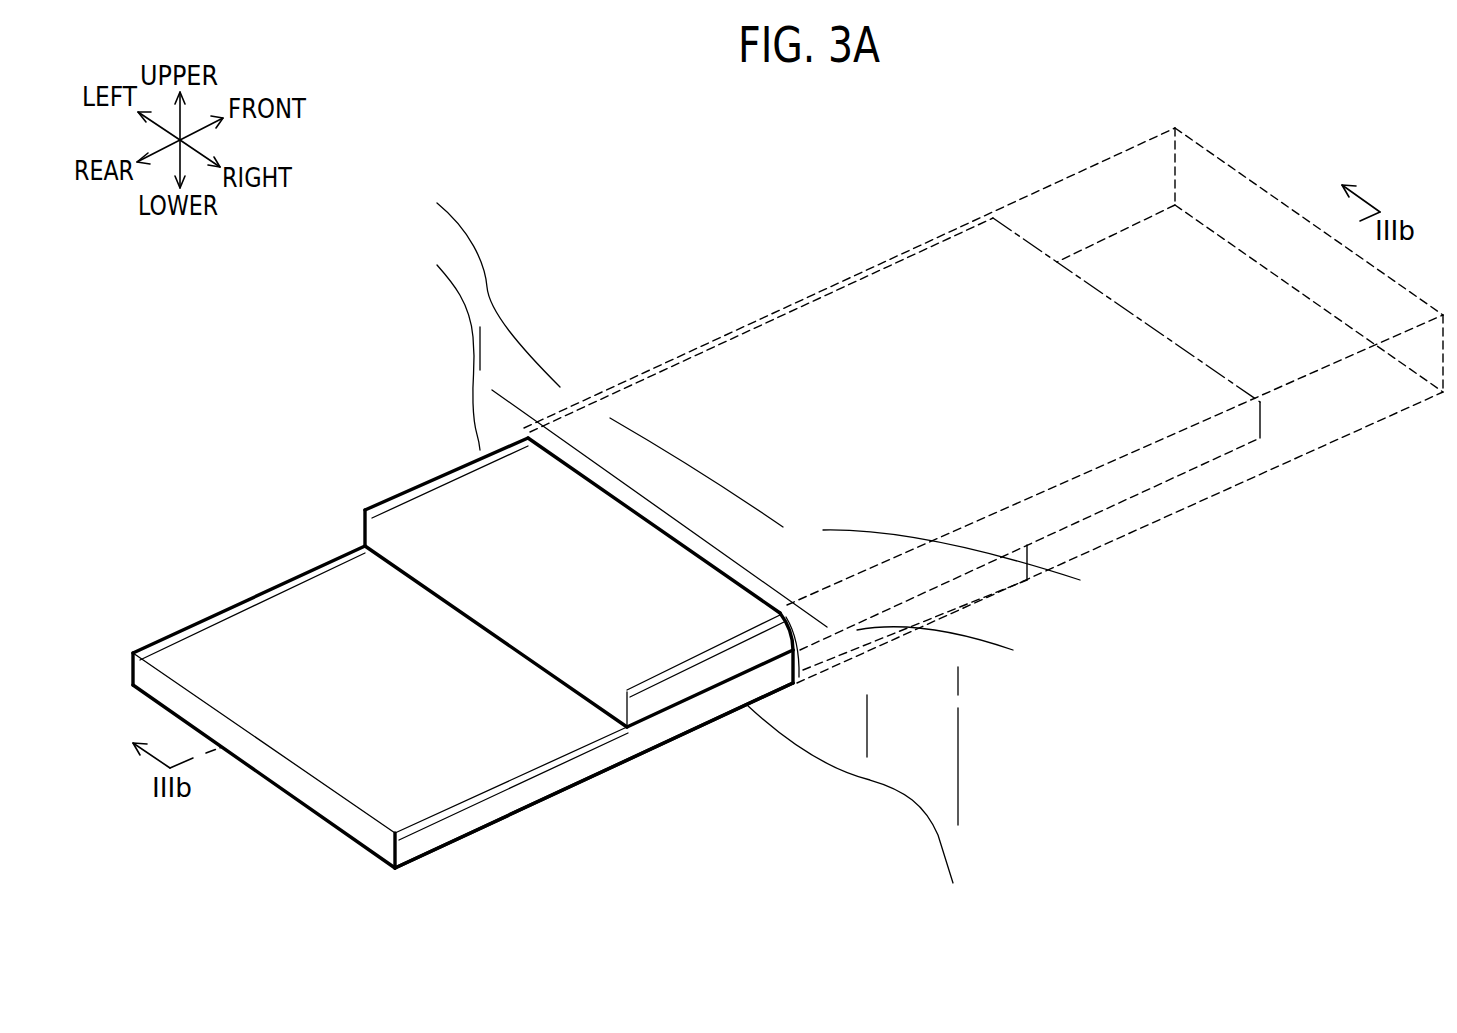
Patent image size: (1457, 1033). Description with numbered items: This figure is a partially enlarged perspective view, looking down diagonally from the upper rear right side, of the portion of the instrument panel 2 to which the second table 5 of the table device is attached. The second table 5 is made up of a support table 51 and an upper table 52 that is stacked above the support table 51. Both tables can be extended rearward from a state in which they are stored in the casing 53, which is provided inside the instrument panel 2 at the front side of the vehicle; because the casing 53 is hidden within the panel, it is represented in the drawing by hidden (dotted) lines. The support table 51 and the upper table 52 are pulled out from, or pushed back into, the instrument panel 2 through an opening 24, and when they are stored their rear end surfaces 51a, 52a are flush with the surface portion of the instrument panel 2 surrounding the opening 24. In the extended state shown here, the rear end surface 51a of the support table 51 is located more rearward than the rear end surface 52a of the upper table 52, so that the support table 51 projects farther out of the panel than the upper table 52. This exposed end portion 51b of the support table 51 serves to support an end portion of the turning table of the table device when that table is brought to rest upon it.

The instrument panel 2 is at (507, 373).
The second table 5 is at (311, 406).
The opening 24 is at (790, 625).
The support table 51 is at (260, 635).
The rear end surface 51a is at (307, 787).
The end portion 51b is at (475, 820).
The upper table 52 is at (445, 525).
The rear end surface 52a is at (583, 677).
The casing 53 is at (1080, 172).